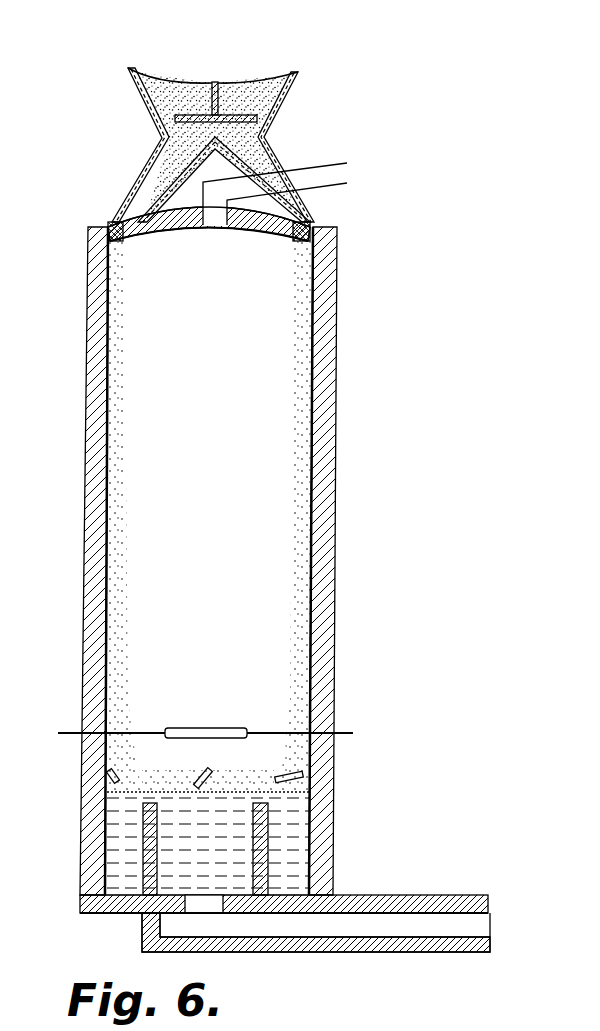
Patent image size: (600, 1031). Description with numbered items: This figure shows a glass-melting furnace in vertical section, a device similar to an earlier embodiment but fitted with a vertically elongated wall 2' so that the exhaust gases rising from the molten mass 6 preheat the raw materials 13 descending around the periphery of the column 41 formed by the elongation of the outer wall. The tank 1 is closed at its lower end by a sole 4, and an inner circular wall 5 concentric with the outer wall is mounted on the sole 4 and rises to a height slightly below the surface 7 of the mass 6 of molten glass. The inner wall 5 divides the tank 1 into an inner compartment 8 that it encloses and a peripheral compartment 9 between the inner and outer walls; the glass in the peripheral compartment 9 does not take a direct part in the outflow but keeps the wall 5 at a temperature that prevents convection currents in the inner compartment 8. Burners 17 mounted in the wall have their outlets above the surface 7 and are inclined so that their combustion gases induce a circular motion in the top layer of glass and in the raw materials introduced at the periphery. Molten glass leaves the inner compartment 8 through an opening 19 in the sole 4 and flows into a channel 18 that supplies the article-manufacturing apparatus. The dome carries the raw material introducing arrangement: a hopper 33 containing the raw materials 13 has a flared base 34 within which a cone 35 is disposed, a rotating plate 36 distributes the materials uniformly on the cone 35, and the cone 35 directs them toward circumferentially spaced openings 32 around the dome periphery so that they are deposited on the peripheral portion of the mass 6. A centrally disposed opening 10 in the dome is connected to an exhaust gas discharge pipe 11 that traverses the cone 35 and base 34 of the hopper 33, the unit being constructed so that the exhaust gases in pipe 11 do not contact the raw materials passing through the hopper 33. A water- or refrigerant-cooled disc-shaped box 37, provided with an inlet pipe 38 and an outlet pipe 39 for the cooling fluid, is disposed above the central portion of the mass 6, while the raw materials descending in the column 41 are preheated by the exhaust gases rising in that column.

The tank 1 is at (335, 830).
The vertically elongated wall 2' is at (215, 561).
The sole 4 is at (132, 912).
The inner circular wall 5 is at (153, 835).
The mass of molten glass 6 is at (193, 808).
The surface 7 is at (221, 791).
The inner compartment 8 is at (220, 861).
The peripheral compartment 9 is at (132, 883).
The opening 10 is at (218, 221).
The exhaust gas discharge pipe 11 is at (318, 173).
The raw materials 13 is at (247, 105).
The burners 17 is at (208, 775).
The channel 18 is at (473, 930).
The opening 19 is at (194, 902).
The openings 32 is at (117, 222).
The hopper 33 is at (147, 103).
The flared base 34 is at (278, 157).
The cone 35 is at (178, 175).
The rotating plate 36 is at (202, 112).
The disc-shaped box 37 is at (203, 727).
The inlet pipe 38 is at (338, 733).
The outlet pipe 39 is at (67, 723).
The column 41 is at (222, 320).